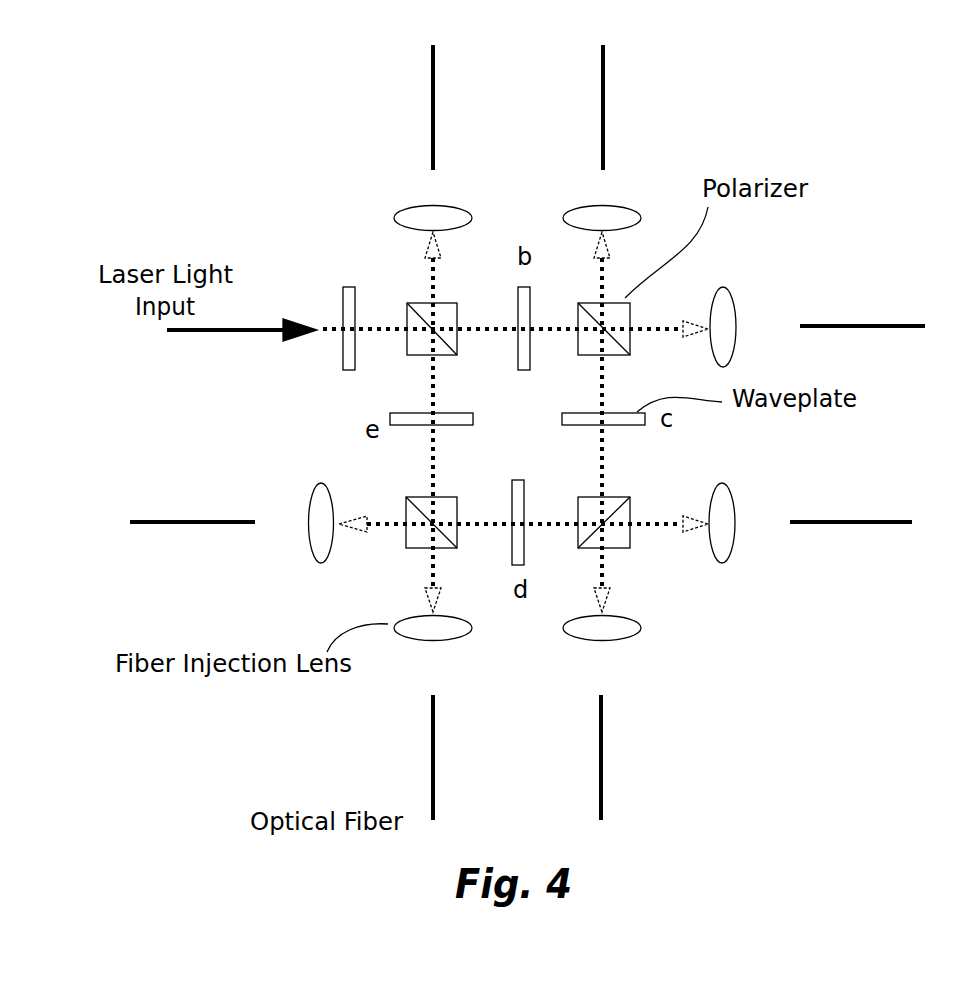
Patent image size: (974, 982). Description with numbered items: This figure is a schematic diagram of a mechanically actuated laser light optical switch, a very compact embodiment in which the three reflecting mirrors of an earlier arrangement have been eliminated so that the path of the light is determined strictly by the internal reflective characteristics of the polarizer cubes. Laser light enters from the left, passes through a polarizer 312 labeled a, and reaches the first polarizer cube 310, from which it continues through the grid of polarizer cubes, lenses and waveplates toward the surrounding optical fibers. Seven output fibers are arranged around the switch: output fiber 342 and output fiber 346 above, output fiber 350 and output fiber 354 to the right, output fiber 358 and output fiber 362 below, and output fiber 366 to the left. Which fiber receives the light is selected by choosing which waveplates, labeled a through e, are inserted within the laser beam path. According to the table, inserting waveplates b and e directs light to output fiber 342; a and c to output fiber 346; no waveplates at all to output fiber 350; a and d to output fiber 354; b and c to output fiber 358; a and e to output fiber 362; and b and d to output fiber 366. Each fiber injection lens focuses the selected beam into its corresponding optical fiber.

The polarizing beam splitter cube 310 is at (407, 345).
The polarizer 312 is at (340, 298).
The output fiber 342 is at (432, 113).
The output fiber 346 is at (605, 108).
The output fiber 350 is at (873, 323).
The output fiber 354 is at (857, 518).
The output fiber 358 is at (605, 793).
The output fiber 362 is at (425, 785).
The output fiber 366 is at (128, 512).